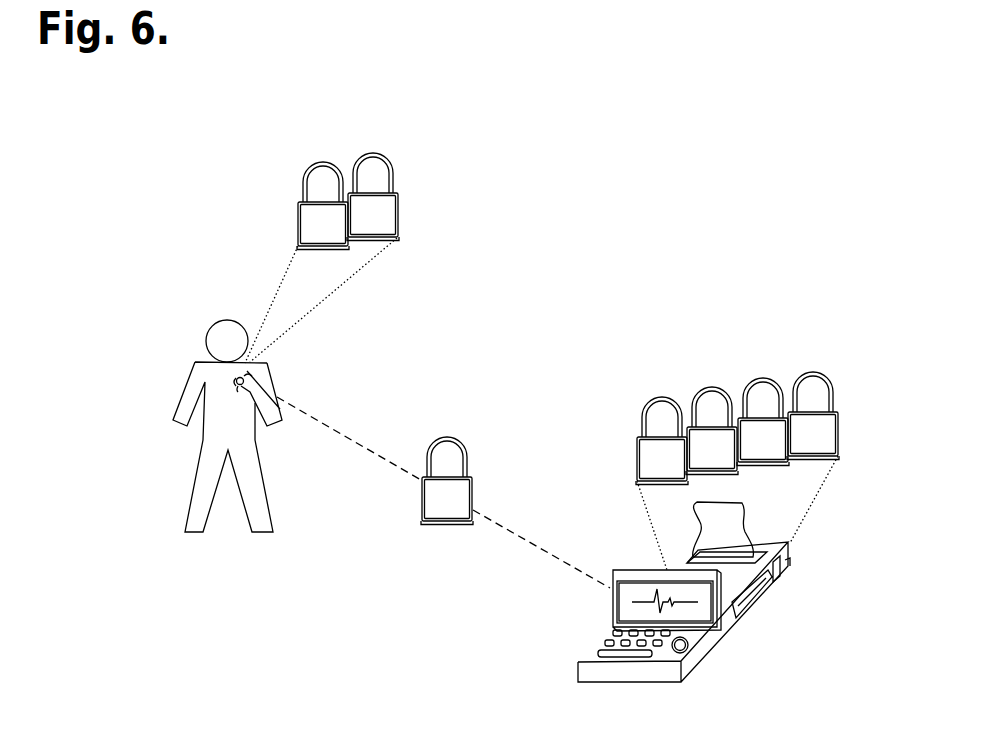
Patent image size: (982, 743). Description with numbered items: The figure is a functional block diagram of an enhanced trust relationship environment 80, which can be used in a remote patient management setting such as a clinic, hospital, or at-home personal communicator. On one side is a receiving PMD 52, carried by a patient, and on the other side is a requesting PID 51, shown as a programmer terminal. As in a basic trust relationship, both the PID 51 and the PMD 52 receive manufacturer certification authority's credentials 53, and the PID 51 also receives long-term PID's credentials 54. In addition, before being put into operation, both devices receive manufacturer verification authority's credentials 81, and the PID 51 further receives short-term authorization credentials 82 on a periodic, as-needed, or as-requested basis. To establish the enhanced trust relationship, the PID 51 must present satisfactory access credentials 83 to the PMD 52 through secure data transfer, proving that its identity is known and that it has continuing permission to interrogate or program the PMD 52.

The enhanced trust relationship environment 80 is at (175, 129).
The PMD 52 is at (262, 381).
The manufacturer certification authority's credentials 53 is at (298, 217).
The manufacturer verification authority's credentials 81 is at (400, 210).
The access credentials 83 is at (468, 456).
The long-term PID's credentials 54 is at (703, 392).
The short-term authorization credentials 82 is at (838, 433).
The PID 51 is at (730, 630).